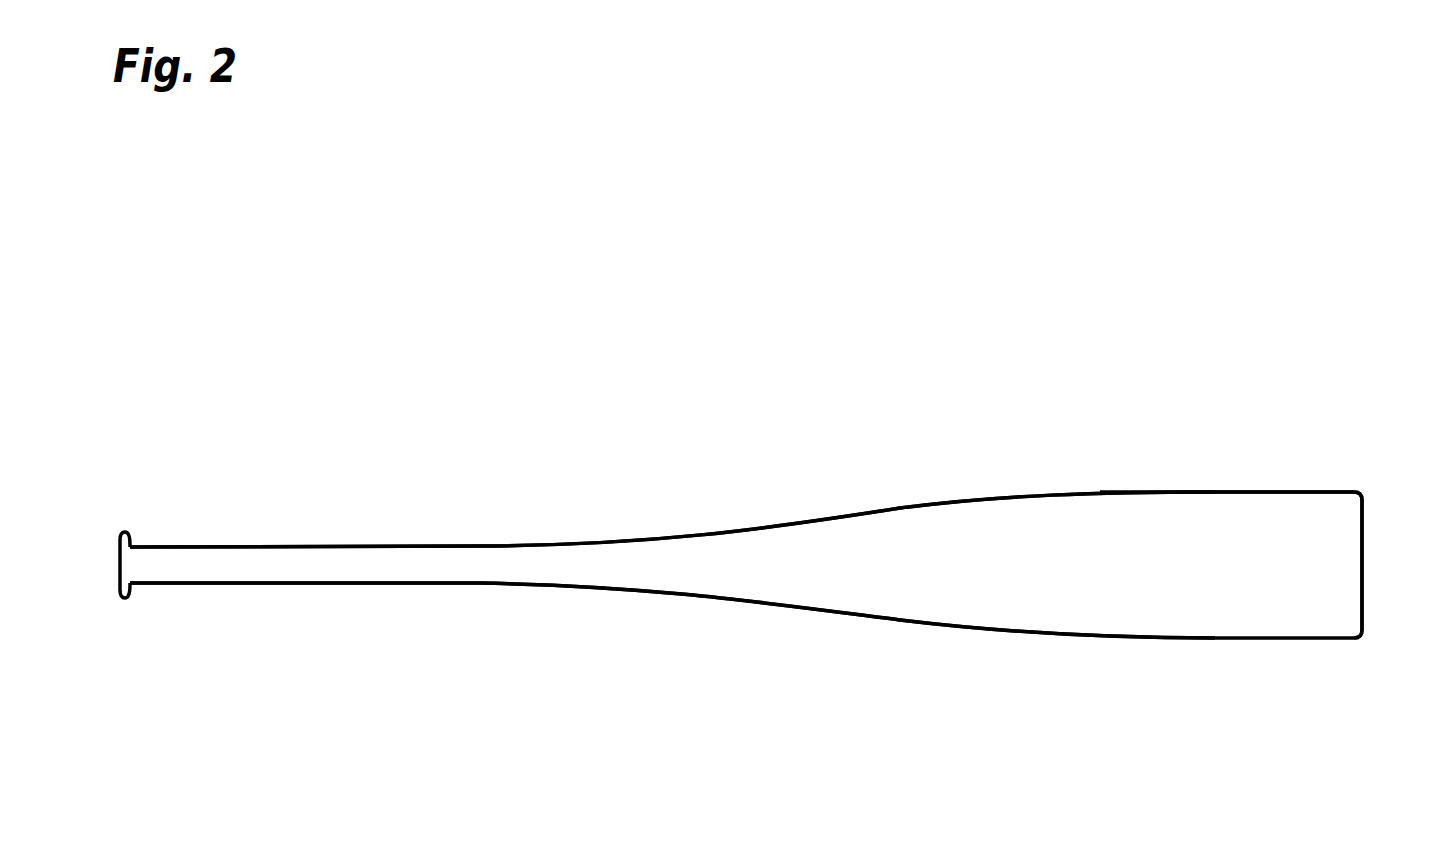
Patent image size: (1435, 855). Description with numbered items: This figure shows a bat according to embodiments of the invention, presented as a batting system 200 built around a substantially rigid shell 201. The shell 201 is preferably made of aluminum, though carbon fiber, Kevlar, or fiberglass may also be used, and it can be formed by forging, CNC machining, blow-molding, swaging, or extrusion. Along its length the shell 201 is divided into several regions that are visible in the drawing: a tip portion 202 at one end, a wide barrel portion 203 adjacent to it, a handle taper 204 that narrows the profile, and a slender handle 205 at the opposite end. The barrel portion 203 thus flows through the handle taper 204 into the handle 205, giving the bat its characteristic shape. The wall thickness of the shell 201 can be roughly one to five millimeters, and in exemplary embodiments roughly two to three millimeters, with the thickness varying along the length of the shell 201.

The batting system 200 is at (667, 368).
The substantially rigid shell 201 is at (950, 462).
The tip portion 202 is at (1366, 543).
The barrel portion 203 is at (1217, 493).
The handle taper 204 is at (818, 610).
The handle 205 is at (399, 545).